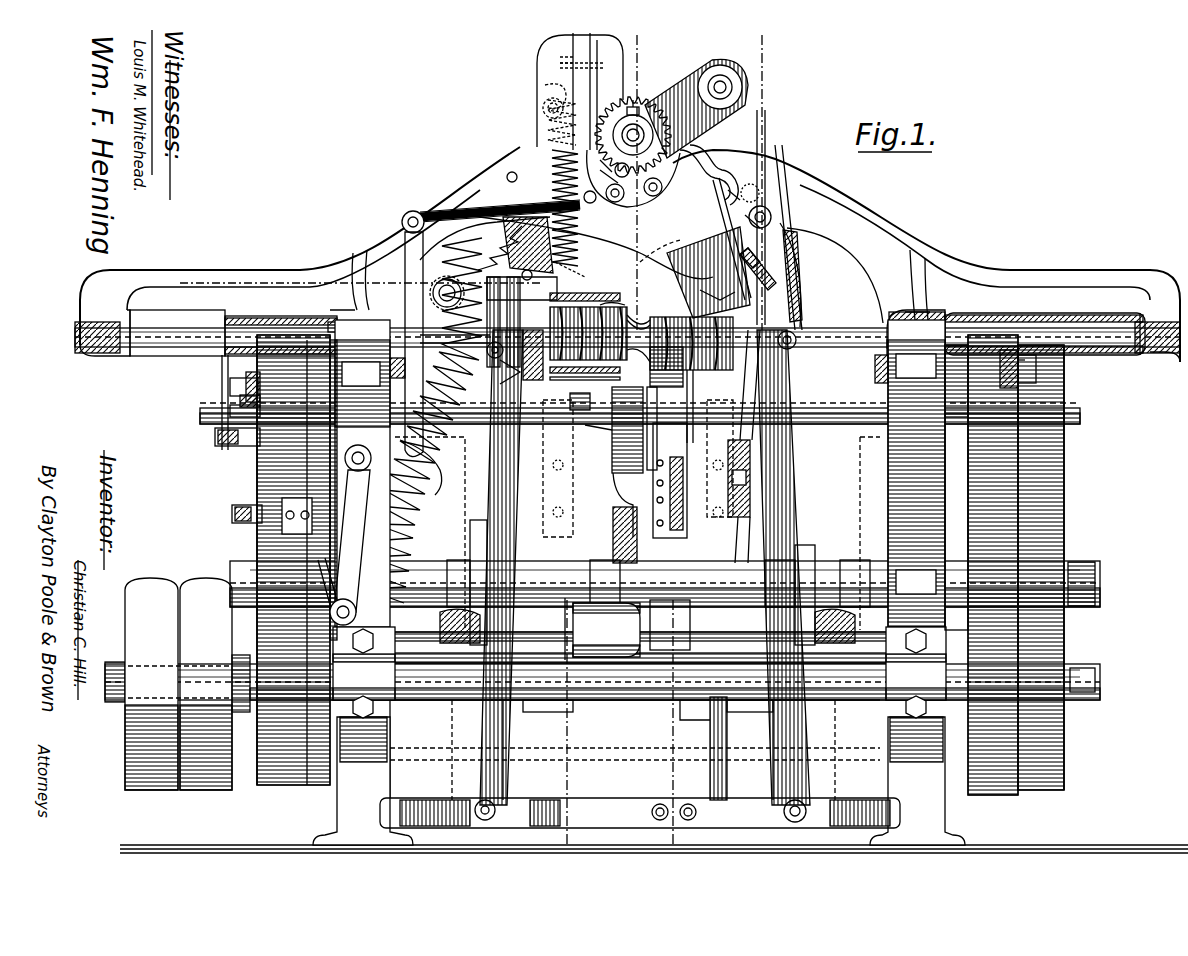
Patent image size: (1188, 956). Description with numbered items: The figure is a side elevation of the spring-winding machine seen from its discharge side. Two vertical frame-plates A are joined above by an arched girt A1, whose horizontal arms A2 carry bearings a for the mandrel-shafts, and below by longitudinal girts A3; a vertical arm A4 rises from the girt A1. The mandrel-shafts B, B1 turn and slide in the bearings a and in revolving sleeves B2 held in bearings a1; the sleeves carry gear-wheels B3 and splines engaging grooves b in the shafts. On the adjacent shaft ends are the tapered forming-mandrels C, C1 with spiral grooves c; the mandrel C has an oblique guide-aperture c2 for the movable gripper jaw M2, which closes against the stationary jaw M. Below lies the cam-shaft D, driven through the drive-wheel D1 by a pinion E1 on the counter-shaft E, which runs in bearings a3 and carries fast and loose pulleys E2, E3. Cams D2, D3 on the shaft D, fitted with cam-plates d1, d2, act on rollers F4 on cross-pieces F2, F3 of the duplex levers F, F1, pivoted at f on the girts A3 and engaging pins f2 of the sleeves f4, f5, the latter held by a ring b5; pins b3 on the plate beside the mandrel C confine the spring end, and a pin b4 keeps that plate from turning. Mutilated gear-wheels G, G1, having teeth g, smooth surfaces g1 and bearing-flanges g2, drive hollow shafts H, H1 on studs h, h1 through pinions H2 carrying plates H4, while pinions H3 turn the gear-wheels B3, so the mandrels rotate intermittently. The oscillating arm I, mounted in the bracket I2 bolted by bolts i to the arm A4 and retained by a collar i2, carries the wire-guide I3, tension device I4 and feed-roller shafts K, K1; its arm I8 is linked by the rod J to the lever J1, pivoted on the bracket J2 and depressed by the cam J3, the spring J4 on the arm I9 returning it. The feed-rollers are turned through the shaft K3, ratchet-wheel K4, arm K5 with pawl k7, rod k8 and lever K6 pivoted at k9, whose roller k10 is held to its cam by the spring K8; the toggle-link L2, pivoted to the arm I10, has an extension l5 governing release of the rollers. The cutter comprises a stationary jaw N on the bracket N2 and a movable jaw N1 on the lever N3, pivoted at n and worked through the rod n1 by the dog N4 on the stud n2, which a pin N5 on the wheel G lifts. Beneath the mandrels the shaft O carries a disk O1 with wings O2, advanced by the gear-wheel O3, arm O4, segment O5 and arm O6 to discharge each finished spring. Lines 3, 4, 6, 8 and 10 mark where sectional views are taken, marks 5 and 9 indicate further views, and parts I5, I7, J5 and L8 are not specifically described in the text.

The main frame standards A is at (639, 582).
The curved arm of frame A1 is at (650, 237).
The arched top frame A2 is at (630, 254).
The base plate A3 is at (640, 813).
The vertical bracket A4 is at (575, 80).
The shaft end cap a is at (110, 325).
The frame lug a1 is at (338, 322).
The bearing block a3 is at (639, 672).
The main shaft B is at (197, 345).
The bearing sleeve end B1 is at (1090, 340).
The bearing B2 is at (906, 329).
The bearing sleeve B3 is at (295, 345).
The shaft portion b is at (826, 345).
The rod b3 is at (585, 338).
The lug b4 is at (521, 357).
The pivot pin b5 is at (797, 322).
The feed roller C is at (599, 328).
The second roller C1 is at (669, 332).
The roller groove c is at (614, 303).
The roller neck c2 is at (620, 310).
The lower shaft D is at (1096, 582).
The bearing standard D1 is at (1073, 510).
The gear D2 is at (1041, 572).
The bearing standard D3 is at (805, 540).
The bearing d1 is at (452, 622).
The bearing d2 is at (842, 601).
The drive shaft E is at (106, 678).
The carriage frame E1 is at (600, 700).
The pulley E2 is at (177, 684).
The pulley E3 is at (215, 684).
The frame plate F is at (637, 511).
The inclined frame bar F1 is at (645, 567).
The bracket F2 is at (460, 750).
The bracket F3 is at (822, 748).
The cross bar F4 is at (648, 709).
The bolt f is at (478, 805).
The bolt f2 is at (805, 808).
The pin f4 is at (489, 362).
The hanger rod f5 is at (788, 237).
The gear wheel G is at (297, 567).
The gear wheel G1 is at (993, 567).
The counter shaft g is at (846, 416).
The gear rim g1 is at (291, 562).
The gear hub g2 is at (265, 485).
The bolt H is at (230, 386).
The nut H1 is at (1030, 365).
The washer H2 is at (246, 395).
The hub H3 is at (962, 400).
The collar H4 is at (262, 415).
The bolt h is at (400, 366).
The bolt h1 is at (880, 368).
The lever arm I is at (690, 270).
The stop I2 is at (615, 80).
The link I3 is at (700, 298).
The arm I4 is at (655, 259).
The curved rod I5 is at (840, 280).
The block I7 is at (749, 252).
The housing I8 is at (642, 178).
The spring seat I9 is at (545, 95).
The pin I10 is at (765, 213).
The pin i is at (560, 63).
The pin i2 is at (642, 94).
The connecting rod J is at (762, 150).
The block J1 is at (670, 625).
The guide J2 is at (712, 728).
The slide J3 is at (679, 480).
The curved arm J4 is at (485, 238).
The pawl J5 is at (422, 467).
The spring K is at (569, 183).
The link K1 is at (326, 573).
The link K3 is at (690, 162).
The ratchet gear K4 is at (672, 130).
The coil spring K5 is at (510, 406).
The vertical link K6 is at (410, 260).
The link K8 is at (378, 541).
The pawl k7 is at (603, 171).
The rod k8 is at (500, 215).
The pivot k9 is at (345, 457).
The pivot k10 is at (344, 599).
The lever L2 is at (728, 190).
The arm L8 is at (700, 82).
The pin l5 is at (756, 204).
The rod M is at (744, 239).
The block M2 is at (679, 408).
The pawl carrier N is at (537, 322).
The pawl N1 is at (570, 267).
The pawl block N2 is at (528, 248).
The spring N3 is at (382, 296).
The bolt N4 is at (237, 445).
The boss N5 is at (238, 513).
The pin n is at (445, 292).
The rod n1 is at (235, 362).
The nut n2 is at (235, 412).
The pinion O is at (621, 454).
The rod O1 is at (638, 478).
The pinion O2 is at (626, 460).
The link O3 is at (610, 438).
The bearing O4 is at (601, 585).
The arm O5 is at (616, 534).
The cam O6 is at (602, 629).
The section line 3 is at (648, 48).
The section line 4 is at (628, 78).
The section line 5 is at (690, 838).
The section line 6 is at (770, 48).
The section line 8 is at (684, 718).
The gear 9 is at (275, 735).
The center line 10 is at (197, 300).